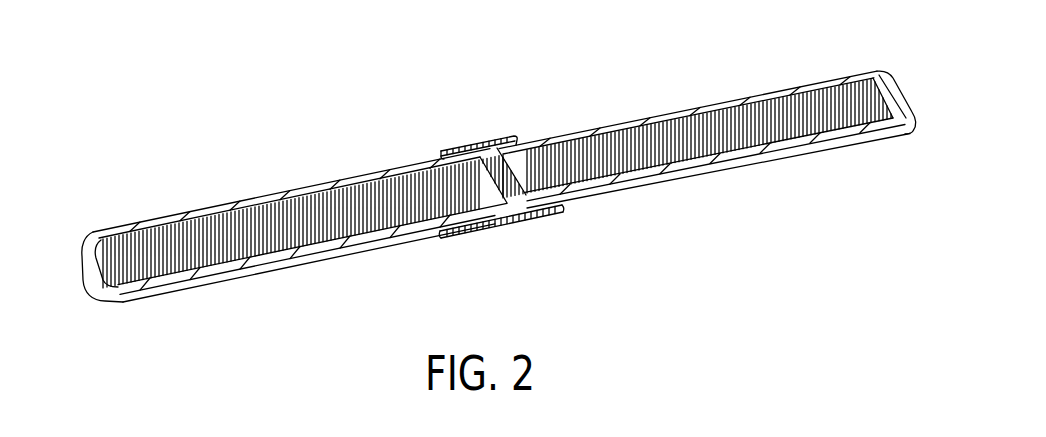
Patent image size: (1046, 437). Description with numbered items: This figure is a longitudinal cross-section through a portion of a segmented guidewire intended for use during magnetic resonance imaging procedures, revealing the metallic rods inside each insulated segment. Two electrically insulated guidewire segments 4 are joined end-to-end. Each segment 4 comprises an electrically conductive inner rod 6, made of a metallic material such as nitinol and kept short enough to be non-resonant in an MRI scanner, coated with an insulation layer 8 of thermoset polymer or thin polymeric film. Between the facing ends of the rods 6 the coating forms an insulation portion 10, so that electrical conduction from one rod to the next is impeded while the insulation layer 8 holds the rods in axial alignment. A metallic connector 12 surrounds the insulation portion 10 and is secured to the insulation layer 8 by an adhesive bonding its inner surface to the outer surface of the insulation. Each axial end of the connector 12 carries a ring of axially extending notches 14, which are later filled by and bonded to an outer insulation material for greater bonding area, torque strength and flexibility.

The electrically insulated guidewire segment 4 is at (499, 156).
The inner rod 6 is at (174, 238).
The insulation layer 8 is at (350, 253).
The insulation portion 10 is at (498, 180).
The connector 12 is at (482, 150).
The notch 14 is at (466, 234).